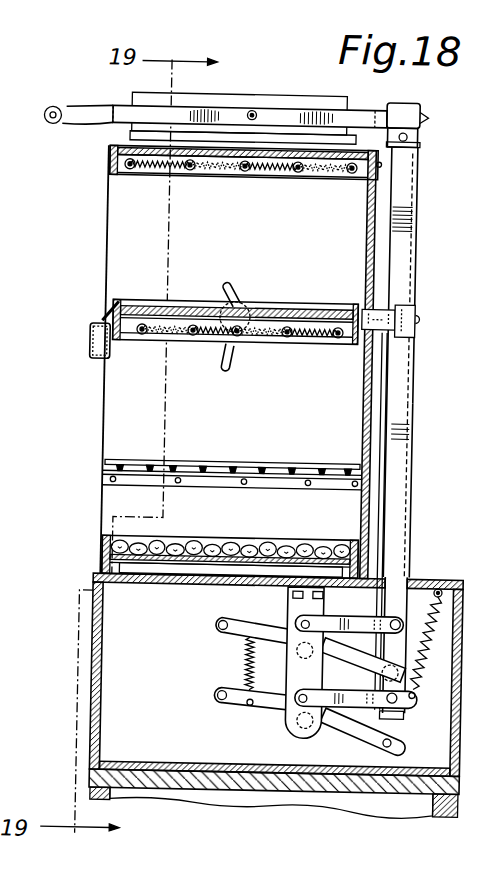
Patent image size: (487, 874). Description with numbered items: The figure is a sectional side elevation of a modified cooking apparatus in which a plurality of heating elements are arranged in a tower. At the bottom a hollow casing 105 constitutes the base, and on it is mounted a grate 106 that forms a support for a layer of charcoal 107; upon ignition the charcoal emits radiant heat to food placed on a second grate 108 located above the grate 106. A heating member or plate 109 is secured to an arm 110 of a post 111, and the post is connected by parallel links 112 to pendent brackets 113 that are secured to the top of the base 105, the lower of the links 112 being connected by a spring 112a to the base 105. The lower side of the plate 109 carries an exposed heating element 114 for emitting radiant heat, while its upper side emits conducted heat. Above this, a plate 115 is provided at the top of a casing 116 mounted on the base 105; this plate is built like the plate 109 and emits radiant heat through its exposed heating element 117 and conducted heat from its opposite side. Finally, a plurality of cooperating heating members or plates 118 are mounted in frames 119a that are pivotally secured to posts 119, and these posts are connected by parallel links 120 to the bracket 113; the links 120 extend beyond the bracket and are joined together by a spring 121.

The hollow casing 105 is at (104, 671).
The grate 106 is at (213, 581).
The layer of charcoal 107 is at (213, 543).
The second grate 108 is at (224, 475).
The heating member or plate 109 is at (297, 309).
The arm 110 is at (378, 325).
The post 111 is at (399, 400).
The parallel links 112 is at (352, 683).
The spring 112a is at (435, 639).
The pendent brackets 113 is at (292, 694).
The exposed heating element 114 is at (308, 332).
The plate 115 is at (217, 164).
The casing 116 is at (363, 212).
The exposed heating element 117 is at (267, 167).
The cooperating heating members or plates 118 is at (285, 88).
The posts 119 is at (401, 189).
The frames 119a is at (141, 119).
The parallel links 120 is at (239, 631).
The spring 121 is at (255, 705).